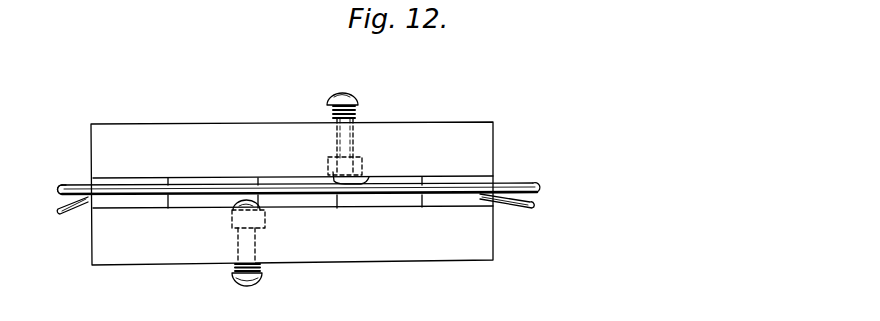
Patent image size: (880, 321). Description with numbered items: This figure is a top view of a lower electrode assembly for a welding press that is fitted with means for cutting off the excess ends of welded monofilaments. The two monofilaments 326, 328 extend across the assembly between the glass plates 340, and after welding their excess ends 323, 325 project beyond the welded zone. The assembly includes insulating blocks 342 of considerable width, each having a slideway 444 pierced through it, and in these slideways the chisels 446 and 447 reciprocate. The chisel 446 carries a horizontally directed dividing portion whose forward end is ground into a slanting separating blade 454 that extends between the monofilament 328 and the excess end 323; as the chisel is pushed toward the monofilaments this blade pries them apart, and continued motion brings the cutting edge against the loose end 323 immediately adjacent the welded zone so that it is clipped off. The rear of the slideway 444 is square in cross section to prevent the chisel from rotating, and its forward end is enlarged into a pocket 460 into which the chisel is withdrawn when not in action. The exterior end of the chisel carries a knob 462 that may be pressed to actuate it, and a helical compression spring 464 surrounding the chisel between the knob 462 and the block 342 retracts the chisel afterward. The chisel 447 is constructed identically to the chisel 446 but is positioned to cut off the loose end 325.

The excess end 323 is at (530, 181).
The excess end 325 is at (67, 210).
The monofilament 326 is at (66, 188).
The monofilament 328 is at (515, 205).
The glass plates 340 is at (440, 180).
The insulating blocks 342 is at (457, 132).
The slideway 444 is at (334, 138).
The chisel 446 is at (362, 157).
The chisel 447 is at (265, 220).
The separating blade 454 is at (369, 178).
The pocket 460 is at (357, 133).
The knob 462 is at (343, 94).
The helical compression spring 464 is at (335, 97).